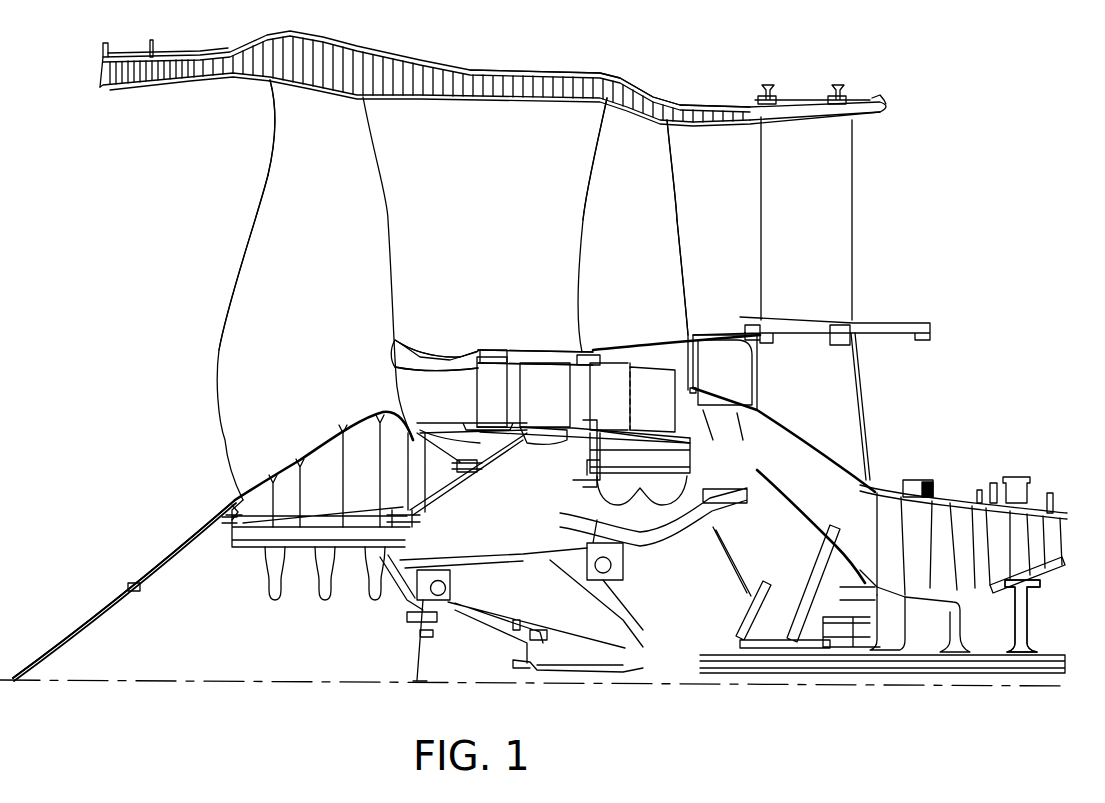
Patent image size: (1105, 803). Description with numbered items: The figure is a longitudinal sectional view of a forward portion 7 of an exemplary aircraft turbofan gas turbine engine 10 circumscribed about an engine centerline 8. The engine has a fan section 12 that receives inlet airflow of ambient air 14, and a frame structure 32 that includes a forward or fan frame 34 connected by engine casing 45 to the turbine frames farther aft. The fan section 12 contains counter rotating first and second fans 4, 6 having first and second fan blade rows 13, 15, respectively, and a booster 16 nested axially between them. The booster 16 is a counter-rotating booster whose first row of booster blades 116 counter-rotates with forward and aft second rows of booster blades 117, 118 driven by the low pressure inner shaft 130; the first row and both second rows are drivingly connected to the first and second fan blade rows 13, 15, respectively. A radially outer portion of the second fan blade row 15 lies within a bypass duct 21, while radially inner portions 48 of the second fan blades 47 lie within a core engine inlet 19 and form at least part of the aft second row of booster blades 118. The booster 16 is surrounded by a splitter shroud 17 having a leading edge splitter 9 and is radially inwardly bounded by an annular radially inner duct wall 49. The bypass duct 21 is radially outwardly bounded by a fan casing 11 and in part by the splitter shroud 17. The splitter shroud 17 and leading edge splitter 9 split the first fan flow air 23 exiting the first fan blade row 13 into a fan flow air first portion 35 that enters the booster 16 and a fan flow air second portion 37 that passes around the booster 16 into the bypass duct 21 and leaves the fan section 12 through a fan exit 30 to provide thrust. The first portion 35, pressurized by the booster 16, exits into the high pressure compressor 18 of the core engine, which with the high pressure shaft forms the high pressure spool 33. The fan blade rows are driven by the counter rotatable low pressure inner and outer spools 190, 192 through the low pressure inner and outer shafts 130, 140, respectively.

The first fan 4 is at (230, 308).
The second fan 6 is at (603, 135).
The forward portion 7 is at (942, 170).
The engine centerline 8 is at (125, 680).
The leading edge splitter 9 is at (405, 352).
The turbofan gas turbine engine 10 is at (593, 387).
The fan casing 11 is at (652, 82).
The fan section 12 is at (497, 52).
The first fan blade row 13 is at (302, 270).
The inlet airflow of ambient air 14 is at (85, 460).
The second fan blade row 15 is at (612, 230).
The booster 16 is at (497, 308).
The splitter shroud 17 is at (505, 348).
The high pressure compressor 18 is at (1062, 462).
The core engine inlet 19 is at (405, 373).
The bypass duct 21 is at (424, 160).
The first fan flow air 23 is at (690, 182).
The fan exit 30 is at (872, 160).
The frame structure 32 is at (805, 97).
The high pressure spool 33 is at (1017, 619).
The fan frame 34 is at (853, 232).
The fan flow air first portion 35 is at (443, 430).
The fan flow air second portion 37 is at (463, 328).
The engine casing 45 is at (885, 497).
The second fan blades 47 is at (657, 323).
The radially inner portions of second fan blades 48 is at (648, 400).
The annular radially inner duct wall 49 is at (535, 347).
The first row of booster blades 116 is at (470, 413).
The forward second row of booster blades 117 is at (545, 415).
The aft second row of booster blades 118 is at (675, 403).
The low pressure inner shaft 130 is at (891, 668).
The low pressure outer shaft 140 is at (777, 662).
The low pressure inner spool 190 is at (598, 665).
The low pressure outer spool 192 is at (650, 618).